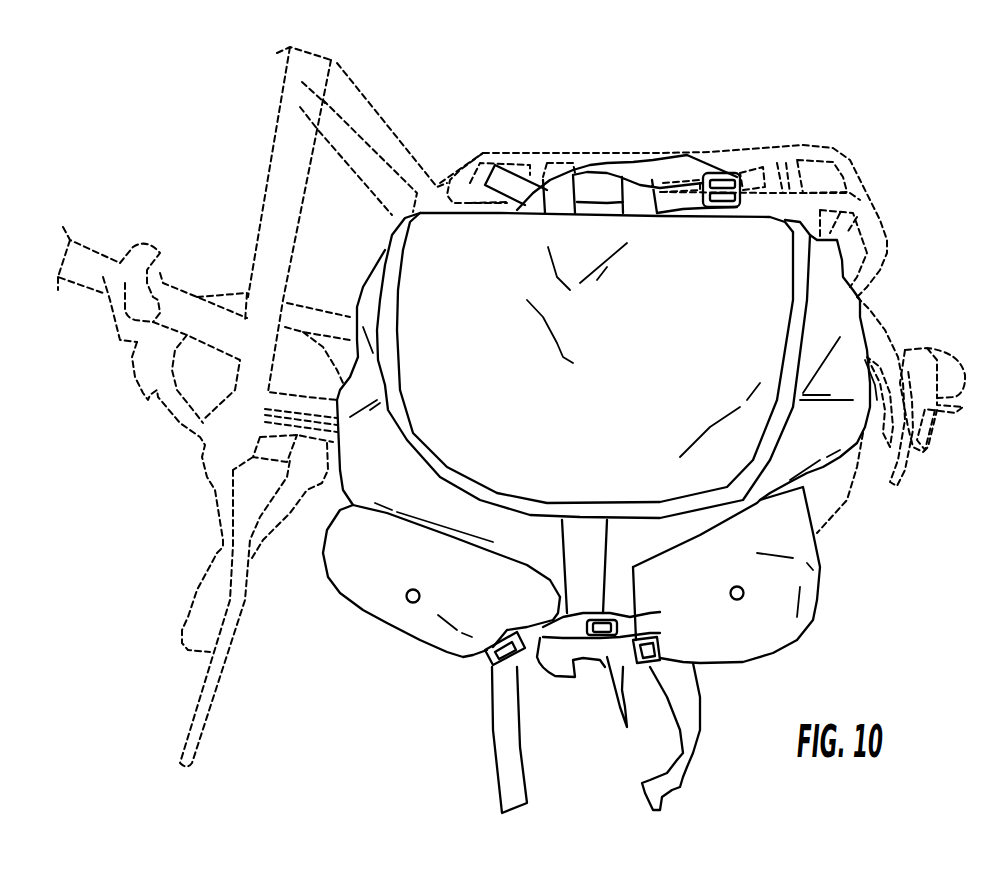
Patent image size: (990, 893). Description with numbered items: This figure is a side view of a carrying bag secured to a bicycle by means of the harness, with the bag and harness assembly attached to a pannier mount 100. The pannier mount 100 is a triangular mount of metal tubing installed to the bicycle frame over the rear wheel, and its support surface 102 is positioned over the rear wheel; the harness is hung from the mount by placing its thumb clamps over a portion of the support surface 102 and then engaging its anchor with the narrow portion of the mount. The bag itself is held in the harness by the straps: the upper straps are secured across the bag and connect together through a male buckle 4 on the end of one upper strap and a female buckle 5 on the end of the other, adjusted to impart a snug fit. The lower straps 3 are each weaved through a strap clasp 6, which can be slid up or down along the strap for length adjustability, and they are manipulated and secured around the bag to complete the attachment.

The pannier mount 100 is at (833, 122).
The support surface 102 is at (720, 152).
The lower straps 3 is at (503, 762).
The male buckle 4 is at (545, 573).
The female buckle 5 is at (607, 653).
The strap clasp 6 is at (487, 657).